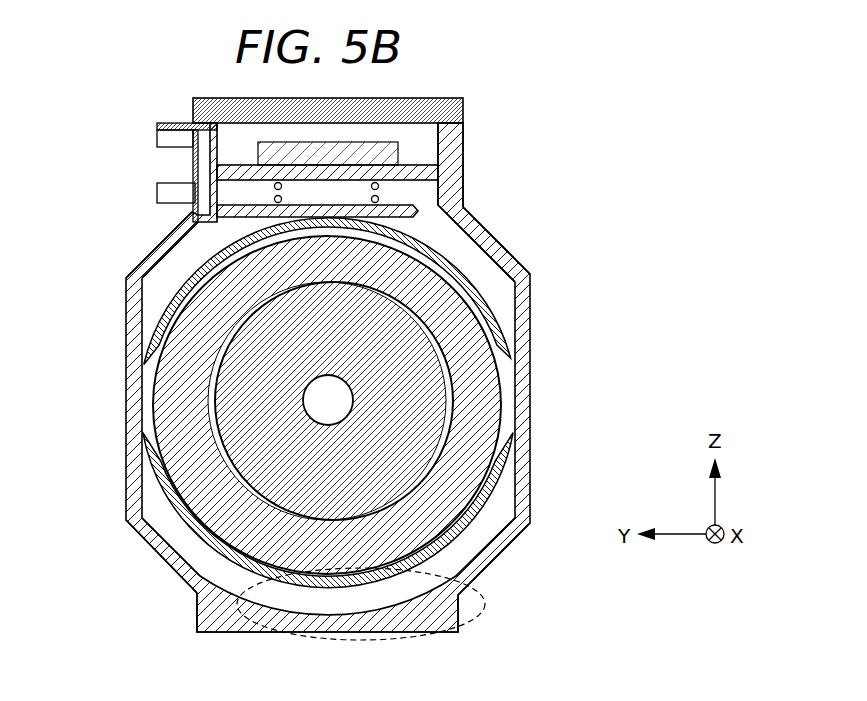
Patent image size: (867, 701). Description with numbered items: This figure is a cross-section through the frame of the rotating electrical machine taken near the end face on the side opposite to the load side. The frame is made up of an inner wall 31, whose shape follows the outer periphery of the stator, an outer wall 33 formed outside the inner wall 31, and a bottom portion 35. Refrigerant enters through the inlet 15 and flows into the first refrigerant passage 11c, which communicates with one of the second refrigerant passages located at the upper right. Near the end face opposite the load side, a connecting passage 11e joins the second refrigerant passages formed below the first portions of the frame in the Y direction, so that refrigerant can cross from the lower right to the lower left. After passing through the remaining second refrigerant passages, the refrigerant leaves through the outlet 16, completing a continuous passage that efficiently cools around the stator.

The outlet 16 is at (172, 123).
The inlet 15 is at (172, 185).
The first refrigerant passage 11c is at (412, 187).
The inner wall 31 is at (447, 260).
The outer wall 33 is at (528, 320).
The connecting passage 11e is at (485, 610).
The bottom portion 35 is at (458, 627).